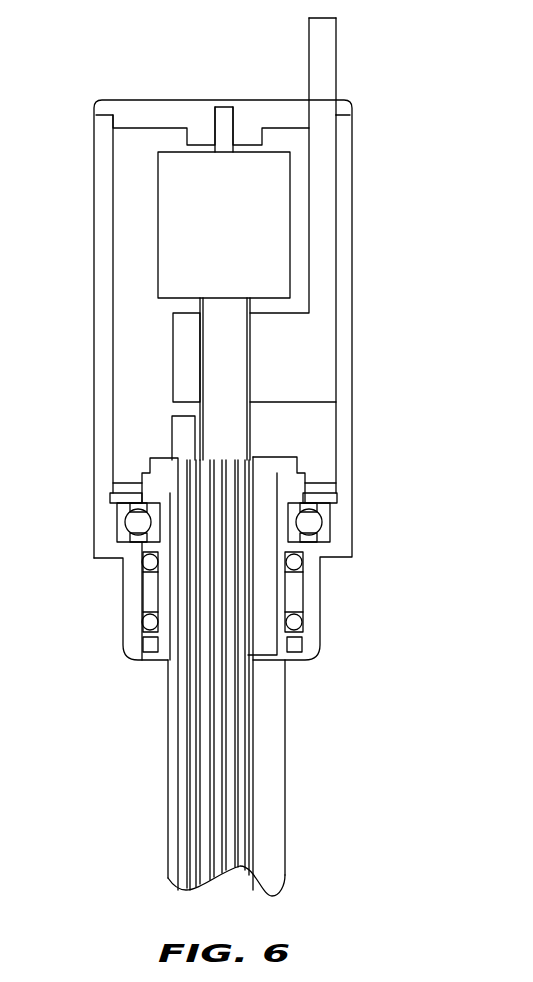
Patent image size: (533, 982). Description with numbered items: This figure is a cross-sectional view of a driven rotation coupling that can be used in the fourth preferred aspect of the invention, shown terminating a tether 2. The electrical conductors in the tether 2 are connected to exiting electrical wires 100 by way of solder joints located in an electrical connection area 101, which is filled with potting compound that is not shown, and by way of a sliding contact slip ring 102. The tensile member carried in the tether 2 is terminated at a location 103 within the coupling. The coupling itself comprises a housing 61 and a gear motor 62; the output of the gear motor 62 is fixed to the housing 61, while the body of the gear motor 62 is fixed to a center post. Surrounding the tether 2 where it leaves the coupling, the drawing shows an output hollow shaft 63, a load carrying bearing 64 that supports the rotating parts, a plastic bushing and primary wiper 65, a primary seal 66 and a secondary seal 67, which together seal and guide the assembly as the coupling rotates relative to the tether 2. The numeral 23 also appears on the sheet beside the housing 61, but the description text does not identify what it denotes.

The tether 2 is at (168, 762).
The drive head 23 is at (19, 250).
The housing 61 is at (352, 282).
The gear motor 62 is at (255, 195).
The output hollow shaft 63 is at (142, 483).
The load carrying bearing 64 is at (117, 520).
The plastic bushing and primary wiper 65 is at (305, 642).
The primary seal 66 is at (303, 612).
The secondary seal 67 is at (301, 556).
The exiting electrical wires 100 is at (336, 43).
The electrical connection area 101 is at (225, 588).
The sliding contact slip ring 102 is at (258, 357).
The termination location 103 is at (180, 425).